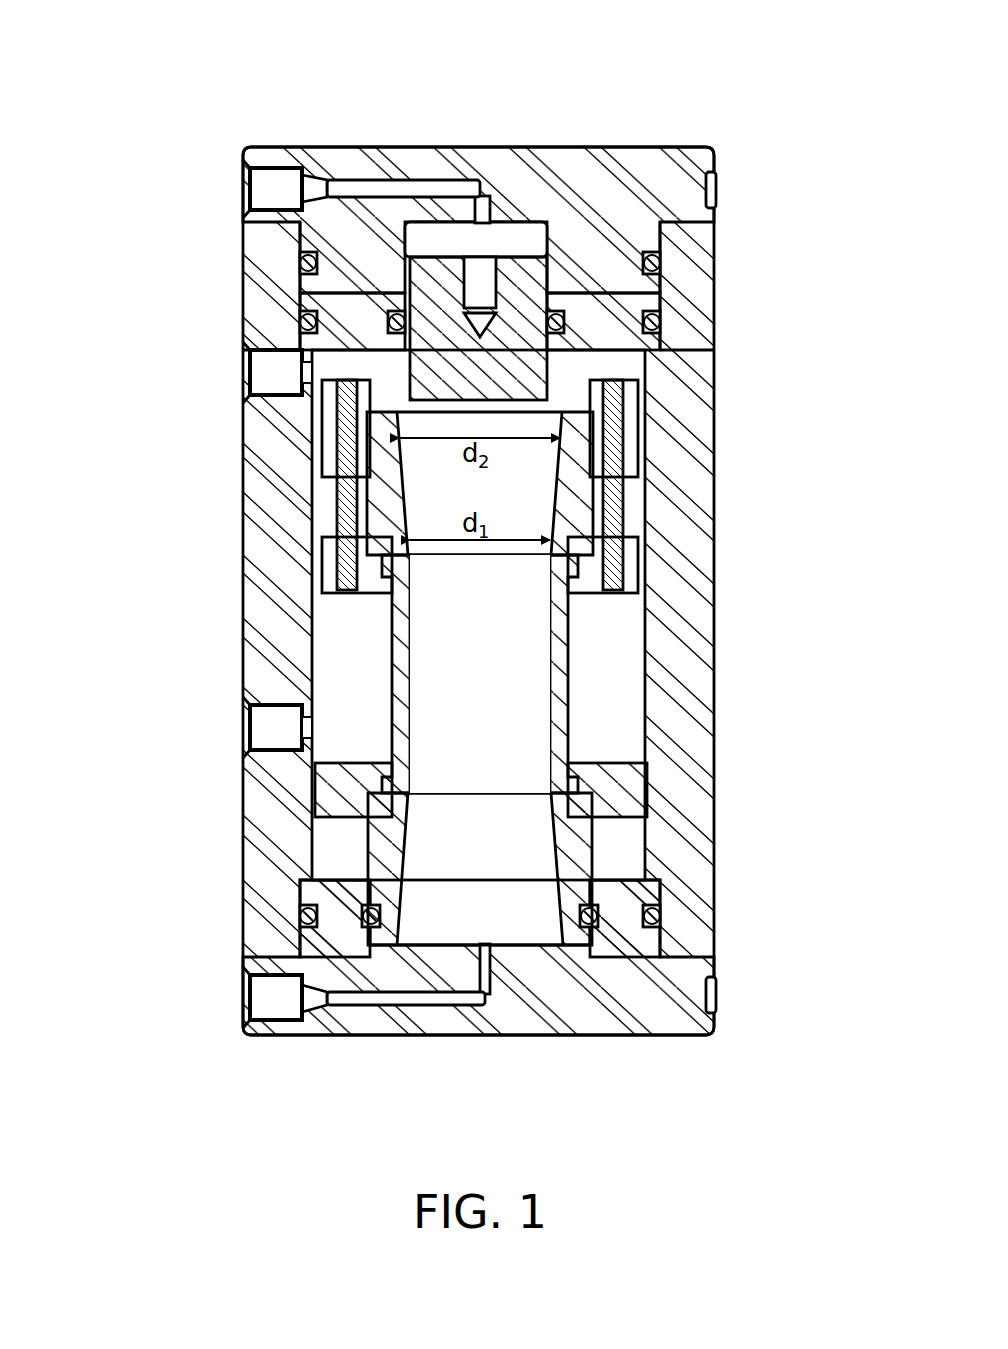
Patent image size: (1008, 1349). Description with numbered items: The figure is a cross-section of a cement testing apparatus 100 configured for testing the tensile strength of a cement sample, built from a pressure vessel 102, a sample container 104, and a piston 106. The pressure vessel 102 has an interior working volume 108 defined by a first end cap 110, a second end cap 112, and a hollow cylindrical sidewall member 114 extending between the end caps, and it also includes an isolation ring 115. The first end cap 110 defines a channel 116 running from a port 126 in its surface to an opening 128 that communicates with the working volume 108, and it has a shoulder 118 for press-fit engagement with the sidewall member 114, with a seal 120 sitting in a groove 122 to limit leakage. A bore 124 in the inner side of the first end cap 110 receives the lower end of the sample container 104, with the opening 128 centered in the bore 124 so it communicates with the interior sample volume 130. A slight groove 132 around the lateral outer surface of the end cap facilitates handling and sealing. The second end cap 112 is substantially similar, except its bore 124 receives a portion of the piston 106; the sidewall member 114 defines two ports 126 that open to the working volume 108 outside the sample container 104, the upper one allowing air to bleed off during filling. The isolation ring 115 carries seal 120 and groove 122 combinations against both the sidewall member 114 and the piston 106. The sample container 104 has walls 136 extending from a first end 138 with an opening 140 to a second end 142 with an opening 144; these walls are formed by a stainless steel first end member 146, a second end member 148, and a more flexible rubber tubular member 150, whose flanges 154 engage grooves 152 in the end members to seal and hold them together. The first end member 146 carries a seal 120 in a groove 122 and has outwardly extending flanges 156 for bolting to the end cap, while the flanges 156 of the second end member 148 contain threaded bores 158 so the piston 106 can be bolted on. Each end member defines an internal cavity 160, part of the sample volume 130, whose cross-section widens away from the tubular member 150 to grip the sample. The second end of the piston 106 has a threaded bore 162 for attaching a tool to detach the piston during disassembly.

The cement testing apparatus 100 is at (232, 100).
The pressure vessel 102 is at (238, 870).
The sample container 104 is at (388, 668).
The piston 106 is at (650, 358).
The interior working volume 108 is at (620, 668).
The first end cap 110 is at (692, 1030).
The second end cap 112 is at (680, 150).
The sidewall member 114 is at (714, 490).
The isolation ring 115 is at (302, 285).
The channel 116 is at (357, 175).
The shoulder 118 is at (300, 945).
The seal 120 is at (300, 320).
The groove 122 is at (645, 250).
The bore 124 is at (522, 218).
The port 126 is at (247, 175).
The opening 128 is at (482, 210).
The interior sample volume 130 is at (457, 687).
The groove 132 is at (717, 188).
The walls 136 is at (578, 620).
The first end 138 is at (405, 820).
The opening 140 is at (458, 955).
The second end 142 is at (600, 505).
The opening 144 is at (548, 405).
The first end member 146 is at (590, 948).
The second end member 148 is at (345, 470).
The tubular member 150 is at (390, 740).
The grooves 152 is at (322, 592).
The flanges 154 is at (620, 790).
The outwardly extending flanges 156 is at (640, 452).
The threaded bores 158 is at (340, 490).
The internal cavity 160 is at (480, 500).
The threaded bore 162 is at (500, 282).